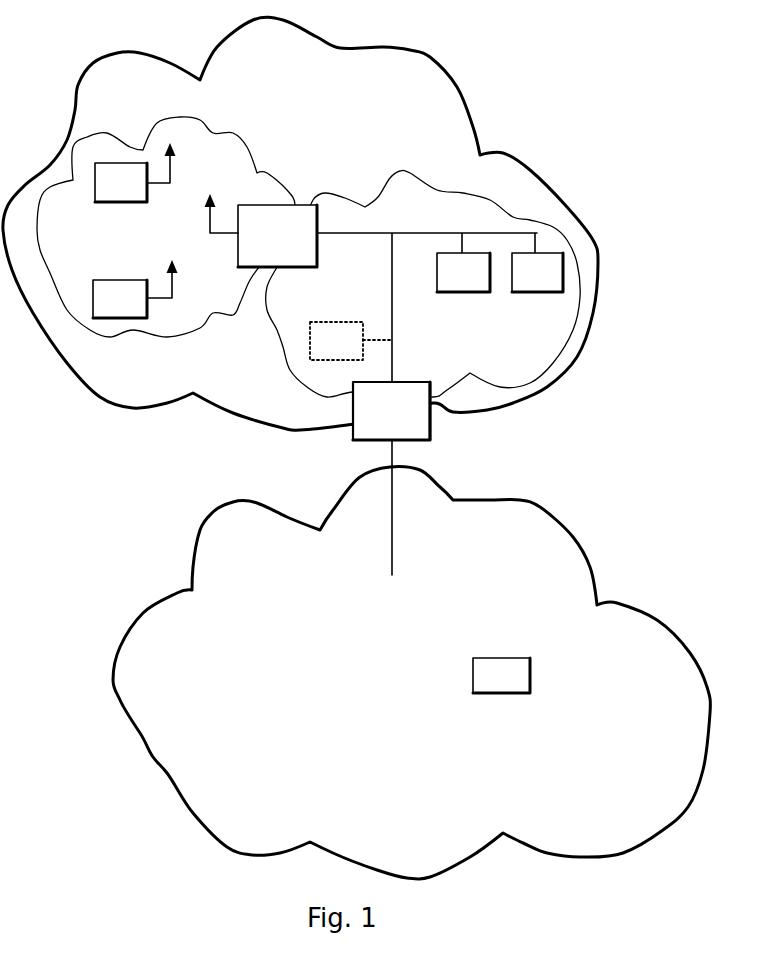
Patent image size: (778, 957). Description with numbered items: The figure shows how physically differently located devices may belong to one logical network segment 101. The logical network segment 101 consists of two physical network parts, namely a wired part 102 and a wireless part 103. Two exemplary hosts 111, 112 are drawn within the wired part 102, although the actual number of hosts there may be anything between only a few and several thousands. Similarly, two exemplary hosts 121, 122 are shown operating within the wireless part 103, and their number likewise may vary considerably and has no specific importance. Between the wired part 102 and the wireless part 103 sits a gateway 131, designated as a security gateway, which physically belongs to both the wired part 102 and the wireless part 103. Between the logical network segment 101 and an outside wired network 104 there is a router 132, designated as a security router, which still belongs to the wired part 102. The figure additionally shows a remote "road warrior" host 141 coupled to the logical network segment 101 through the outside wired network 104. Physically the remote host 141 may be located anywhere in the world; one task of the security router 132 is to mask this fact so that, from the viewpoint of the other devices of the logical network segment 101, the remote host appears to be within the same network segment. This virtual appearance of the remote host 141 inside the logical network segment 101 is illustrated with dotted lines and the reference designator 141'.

The logical network segment 101 is at (410, 50).
The wired part 102 is at (402, 173).
The wireless part 103 is at (240, 133).
The outside wired network 104 is at (527, 500).
The host 111 is at (480, 293).
The host 112 is at (557, 293).
The host 121 is at (117, 203).
The host 122 is at (110, 280).
The security gateway 131 is at (303, 203).
The security router 132 is at (430, 427).
The remote host 141 is at (498, 692).
The virtual appearance of remote host 141' is at (350, 324).